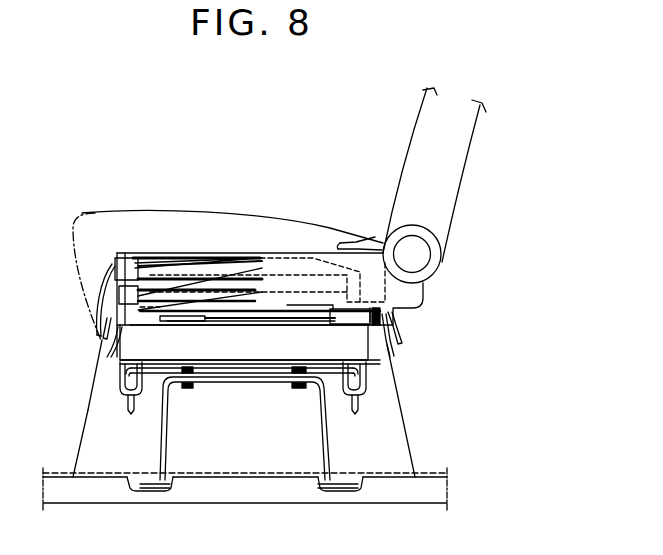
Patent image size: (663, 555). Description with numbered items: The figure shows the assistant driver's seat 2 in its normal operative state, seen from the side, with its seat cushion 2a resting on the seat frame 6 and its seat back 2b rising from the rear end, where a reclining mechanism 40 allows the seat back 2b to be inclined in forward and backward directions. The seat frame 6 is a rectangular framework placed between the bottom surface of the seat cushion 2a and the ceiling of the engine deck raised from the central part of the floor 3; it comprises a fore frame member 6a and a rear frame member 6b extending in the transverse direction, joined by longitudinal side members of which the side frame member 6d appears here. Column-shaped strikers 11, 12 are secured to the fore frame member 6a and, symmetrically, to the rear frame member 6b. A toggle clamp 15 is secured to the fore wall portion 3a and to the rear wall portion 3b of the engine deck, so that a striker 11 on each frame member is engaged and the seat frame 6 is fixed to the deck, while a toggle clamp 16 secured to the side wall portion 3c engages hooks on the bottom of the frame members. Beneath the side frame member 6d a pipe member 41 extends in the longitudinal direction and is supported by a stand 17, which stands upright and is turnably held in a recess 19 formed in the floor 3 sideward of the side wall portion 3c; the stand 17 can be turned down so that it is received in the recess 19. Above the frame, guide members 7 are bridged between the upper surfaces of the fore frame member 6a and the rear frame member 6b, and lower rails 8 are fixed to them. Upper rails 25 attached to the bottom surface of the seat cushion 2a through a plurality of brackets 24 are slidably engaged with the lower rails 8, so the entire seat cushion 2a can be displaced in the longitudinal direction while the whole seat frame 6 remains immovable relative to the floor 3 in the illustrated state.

The assistant driver's seat 2 is at (495, 178).
The seat cushion 2a is at (302, 234).
The seat back 2b is at (471, 133).
The floor 3 is at (105, 474).
The fore wall portion 3a is at (86, 415).
The rear wall portion 3b is at (408, 405).
The side wall portion 3c is at (86, 457).
The seat frame 6 is at (233, 247).
The fore frame member 6a is at (130, 266).
The rear frame member 6b is at (357, 317).
The side frame member 6d is at (250, 361).
The guide member 7 is at (187, 297).
The lower rail 8 is at (200, 274).
The striker 11 is at (108, 270).
The striker 12 is at (99, 345).
The toggle clamp 15 is at (96, 324).
The toggle clamp 16 is at (132, 413).
The stand 17 is at (241, 383).
The recess 19 is at (167, 480).
The bracket 24 is at (204, 312).
The upper rail 25 is at (270, 318).
The reclining mechanism 40 is at (421, 245).
The pipe member 41 is at (213, 373).